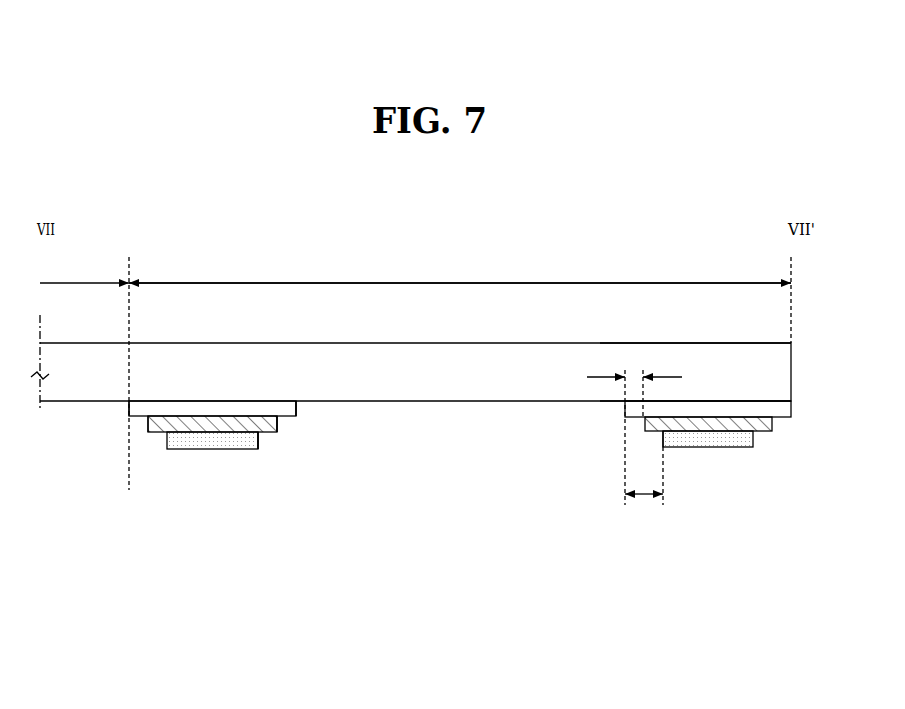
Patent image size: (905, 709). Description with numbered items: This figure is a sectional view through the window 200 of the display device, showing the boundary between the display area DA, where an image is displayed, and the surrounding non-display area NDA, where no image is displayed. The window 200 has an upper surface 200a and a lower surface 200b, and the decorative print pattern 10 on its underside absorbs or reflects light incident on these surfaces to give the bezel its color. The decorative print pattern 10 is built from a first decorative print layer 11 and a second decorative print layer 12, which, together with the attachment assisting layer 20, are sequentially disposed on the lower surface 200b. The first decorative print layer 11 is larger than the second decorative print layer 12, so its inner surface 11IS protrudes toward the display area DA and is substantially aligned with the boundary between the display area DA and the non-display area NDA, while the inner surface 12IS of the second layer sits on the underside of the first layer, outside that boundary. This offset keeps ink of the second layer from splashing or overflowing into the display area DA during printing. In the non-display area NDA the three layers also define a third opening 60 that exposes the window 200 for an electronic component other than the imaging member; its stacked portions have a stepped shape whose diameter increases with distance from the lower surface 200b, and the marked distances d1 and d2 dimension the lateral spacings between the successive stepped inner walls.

The window 200 is at (725, 350).
The upper surface of the window 200a is at (757, 343).
The lower surface of the window 200b is at (760, 400).
The decorative print pattern 10 is at (851, 404).
The first decorative print layer 11 is at (128, 410).
The inner surface of the first decorative print layer 11IS is at (128, 403).
The second decorative print layer 12 is at (157, 430).
The inner surface of the second decorative print layer 12IS is at (147, 428).
The attachment assisting layer 20 is at (219, 448).
The third opening 60 is at (613, 588).
The shortest distance d1 is at (634, 426).
The second distance d2 is at (644, 485).
The display area DA is at (84, 271).
The non-display area NDA is at (460, 271).